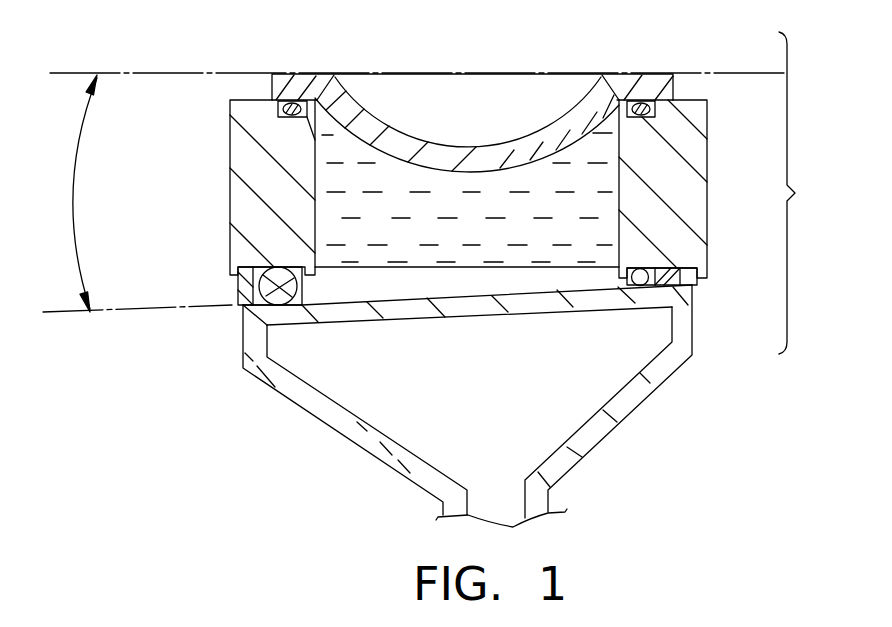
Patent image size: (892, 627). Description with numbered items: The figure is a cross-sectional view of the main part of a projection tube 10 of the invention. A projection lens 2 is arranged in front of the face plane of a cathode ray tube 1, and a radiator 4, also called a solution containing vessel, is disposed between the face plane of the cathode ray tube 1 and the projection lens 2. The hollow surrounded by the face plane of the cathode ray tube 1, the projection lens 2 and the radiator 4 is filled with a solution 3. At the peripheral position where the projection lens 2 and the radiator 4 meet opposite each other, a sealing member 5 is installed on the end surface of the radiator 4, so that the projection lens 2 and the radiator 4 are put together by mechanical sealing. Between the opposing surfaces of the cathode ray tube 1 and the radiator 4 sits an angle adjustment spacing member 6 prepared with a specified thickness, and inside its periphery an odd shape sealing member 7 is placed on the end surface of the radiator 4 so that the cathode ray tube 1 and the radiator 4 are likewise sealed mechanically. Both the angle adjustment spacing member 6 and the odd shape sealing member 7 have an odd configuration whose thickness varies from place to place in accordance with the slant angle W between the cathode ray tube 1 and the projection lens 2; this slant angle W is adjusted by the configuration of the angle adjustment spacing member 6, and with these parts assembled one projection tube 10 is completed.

The cathode ray tube 1 is at (652, 375).
The projection lens 2 is at (670, 78).
The solution 3 is at (347, 147).
The radiator 4 is at (697, 167).
The sealing member 5 is at (637, 107).
The angle adjustment spacing member 6 is at (697, 268).
The odd shape sealing member 7 is at (667, 292).
The projection tube 10 is at (806, 193).
The slant angle W is at (69, 193).